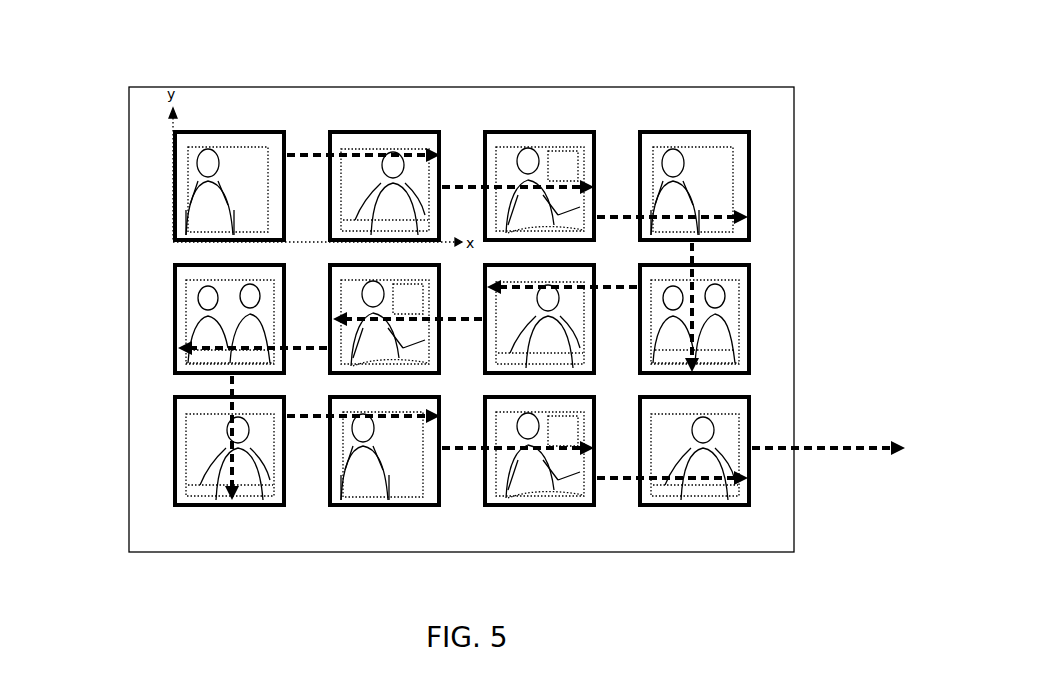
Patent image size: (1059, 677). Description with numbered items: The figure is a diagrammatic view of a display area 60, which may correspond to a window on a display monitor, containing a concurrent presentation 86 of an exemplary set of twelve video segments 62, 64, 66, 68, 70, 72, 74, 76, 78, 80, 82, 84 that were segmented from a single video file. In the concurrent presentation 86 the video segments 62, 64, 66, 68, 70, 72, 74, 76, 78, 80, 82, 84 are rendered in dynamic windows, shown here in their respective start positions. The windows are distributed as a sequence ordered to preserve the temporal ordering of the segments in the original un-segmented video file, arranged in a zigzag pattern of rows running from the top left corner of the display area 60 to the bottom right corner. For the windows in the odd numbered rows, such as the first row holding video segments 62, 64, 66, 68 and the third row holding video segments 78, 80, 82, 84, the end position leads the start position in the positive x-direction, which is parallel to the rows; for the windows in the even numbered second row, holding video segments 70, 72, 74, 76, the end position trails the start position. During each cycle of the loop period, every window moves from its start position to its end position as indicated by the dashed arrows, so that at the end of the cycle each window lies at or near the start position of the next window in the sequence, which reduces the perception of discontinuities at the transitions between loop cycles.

The display area 60 is at (794, 318).
The concurrent presentation 86 is at (88, 78).
The video segment 62 is at (252, 130).
The video segment 64 is at (407, 130).
The video segment 66 is at (572, 130).
The video segment 68 is at (728, 130).
The video segment 70 is at (744, 262).
The video segment 72 is at (600, 252).
The video segment 74 is at (328, 262).
The video segment 76 is at (173, 262).
The video segment 78 is at (192, 510).
The video segment 80 is at (350, 510).
The video segment 82 is at (510, 509).
The video segment 84 is at (668, 509).